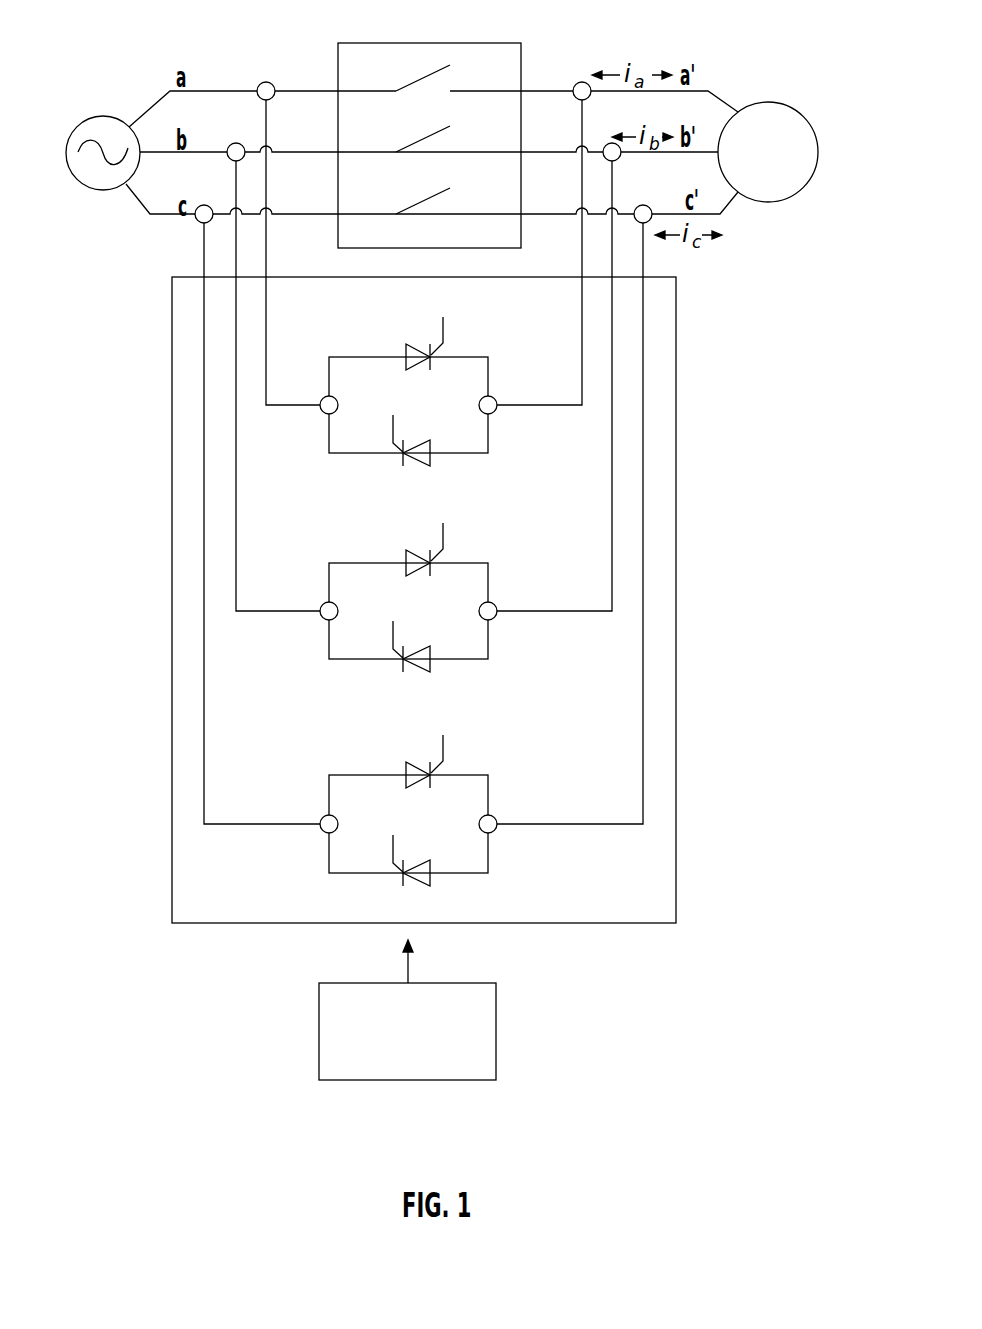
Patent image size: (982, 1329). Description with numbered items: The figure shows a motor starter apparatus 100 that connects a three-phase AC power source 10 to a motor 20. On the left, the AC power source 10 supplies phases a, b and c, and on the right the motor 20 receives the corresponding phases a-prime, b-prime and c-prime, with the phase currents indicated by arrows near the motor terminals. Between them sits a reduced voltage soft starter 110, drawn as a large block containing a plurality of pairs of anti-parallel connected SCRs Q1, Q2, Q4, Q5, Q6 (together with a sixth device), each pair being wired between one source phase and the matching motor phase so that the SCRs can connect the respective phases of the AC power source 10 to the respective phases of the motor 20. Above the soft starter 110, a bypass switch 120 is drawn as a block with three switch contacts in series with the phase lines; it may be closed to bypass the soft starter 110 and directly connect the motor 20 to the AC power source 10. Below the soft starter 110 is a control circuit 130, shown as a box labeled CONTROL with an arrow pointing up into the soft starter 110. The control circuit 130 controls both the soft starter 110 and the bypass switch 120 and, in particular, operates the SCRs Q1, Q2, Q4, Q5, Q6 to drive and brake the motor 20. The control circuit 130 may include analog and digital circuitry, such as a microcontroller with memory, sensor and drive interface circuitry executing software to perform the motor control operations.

The AC power source 10 is at (80, 122).
The motor 20 is at (770, 102).
The motor starter apparatus 100 is at (683, 1030).
The reduced voltage soft starter 110 is at (676, 608).
The bypass switch 120 is at (447, 43).
The control circuit 130 is at (412, 1080).
The SCR Q1 is at (412, 343).
The SCR Q2 is at (418, 879).
The SCR Q4 is at (427, 468).
The SCR Q5 is at (410, 763).
The SCR Q6 is at (412, 550).